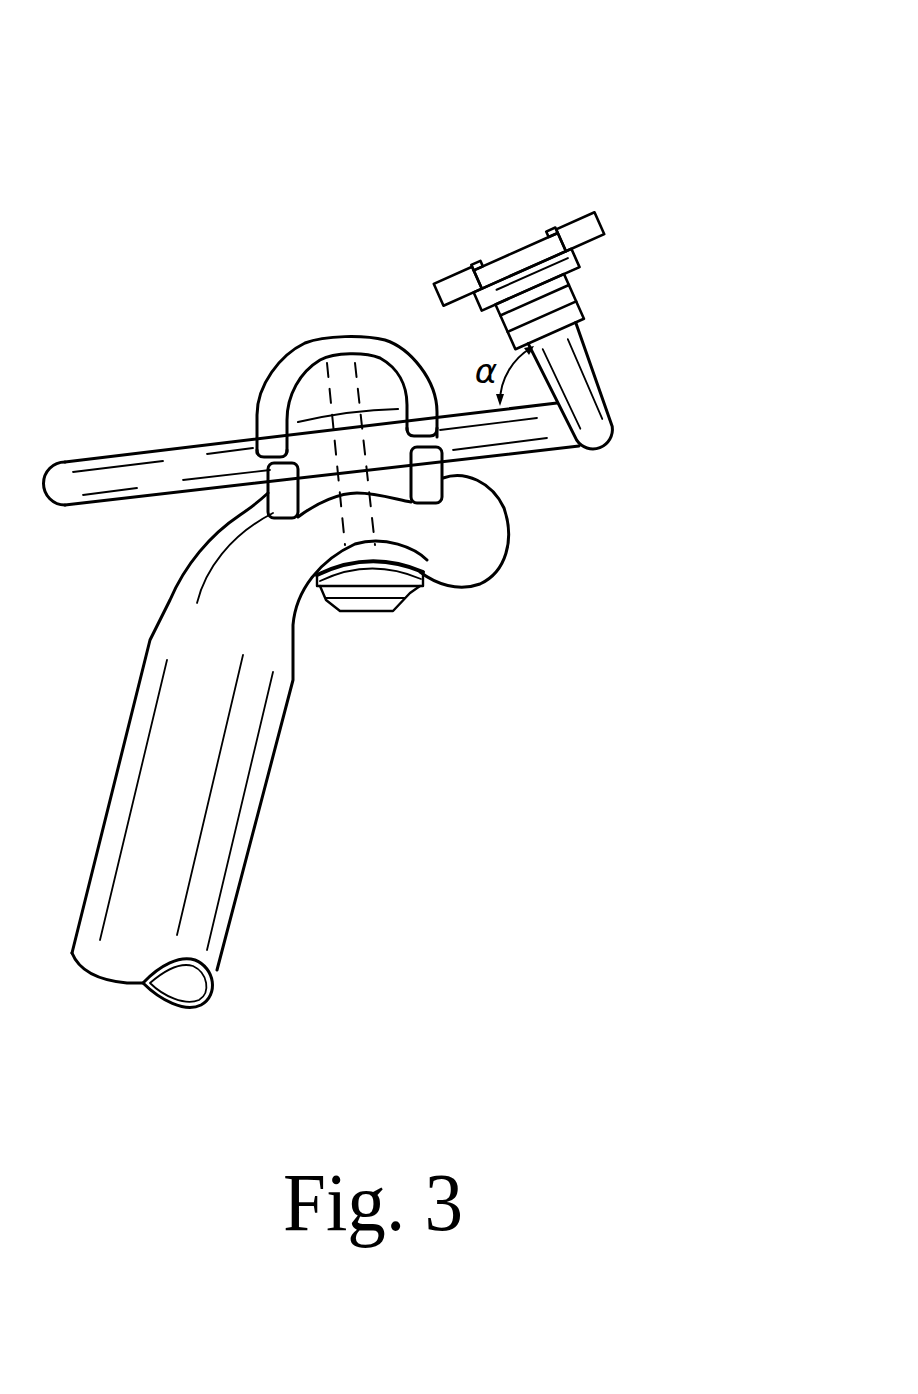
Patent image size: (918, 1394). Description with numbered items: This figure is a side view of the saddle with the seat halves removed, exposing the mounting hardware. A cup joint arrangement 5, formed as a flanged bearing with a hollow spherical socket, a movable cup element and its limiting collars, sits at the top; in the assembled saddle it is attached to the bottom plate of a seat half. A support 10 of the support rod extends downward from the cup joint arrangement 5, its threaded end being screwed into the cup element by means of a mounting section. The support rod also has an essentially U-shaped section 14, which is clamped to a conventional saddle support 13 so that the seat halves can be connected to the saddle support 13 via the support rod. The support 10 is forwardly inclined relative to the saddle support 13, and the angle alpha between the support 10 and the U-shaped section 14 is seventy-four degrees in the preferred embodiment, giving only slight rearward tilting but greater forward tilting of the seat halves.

The cup joint arrangement 5 is at (490, 186).
The support 10 is at (583, 402).
The saddle support 13 is at (220, 858).
The U-shaped section 14 is at (165, 478).